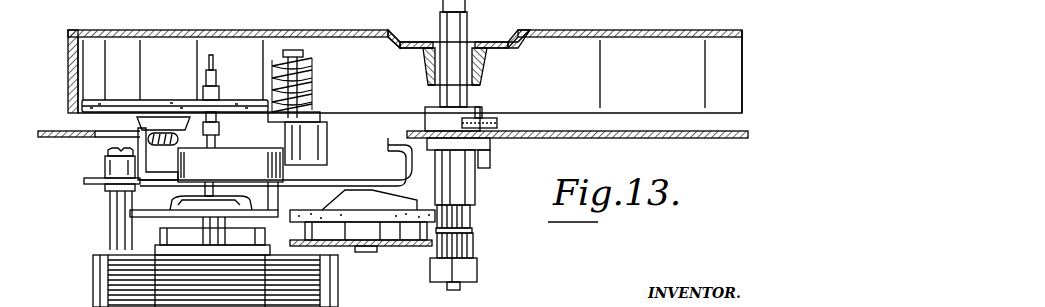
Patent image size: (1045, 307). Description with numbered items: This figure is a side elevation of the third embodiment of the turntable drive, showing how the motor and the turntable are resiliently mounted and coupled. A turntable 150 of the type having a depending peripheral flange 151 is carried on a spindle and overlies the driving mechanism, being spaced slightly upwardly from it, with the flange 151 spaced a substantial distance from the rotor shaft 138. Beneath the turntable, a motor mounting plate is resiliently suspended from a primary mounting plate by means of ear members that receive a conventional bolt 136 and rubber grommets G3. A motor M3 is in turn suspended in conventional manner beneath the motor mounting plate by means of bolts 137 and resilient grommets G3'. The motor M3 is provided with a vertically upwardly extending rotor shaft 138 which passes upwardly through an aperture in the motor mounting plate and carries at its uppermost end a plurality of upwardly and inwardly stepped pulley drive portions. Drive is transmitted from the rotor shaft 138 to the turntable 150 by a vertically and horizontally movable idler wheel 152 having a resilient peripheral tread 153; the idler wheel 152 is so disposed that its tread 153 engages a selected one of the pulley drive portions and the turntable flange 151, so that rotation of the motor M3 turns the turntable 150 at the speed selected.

The turntable 150 is at (275, 30).
The depending peripheral flange 151 is at (68, 80).
The idler wheel 152 is at (150, 100).
The resilient peripheral tread 153 is at (106, 108).
The bolt 136 is at (492, 125).
The bolt 137 is at (105, 153).
The rotor shaft 138 is at (218, 188).
The rubber grommet G3 is at (393, 138).
The resilient grommet G3' is at (84, 209).
The motor M3 is at (103, 246).